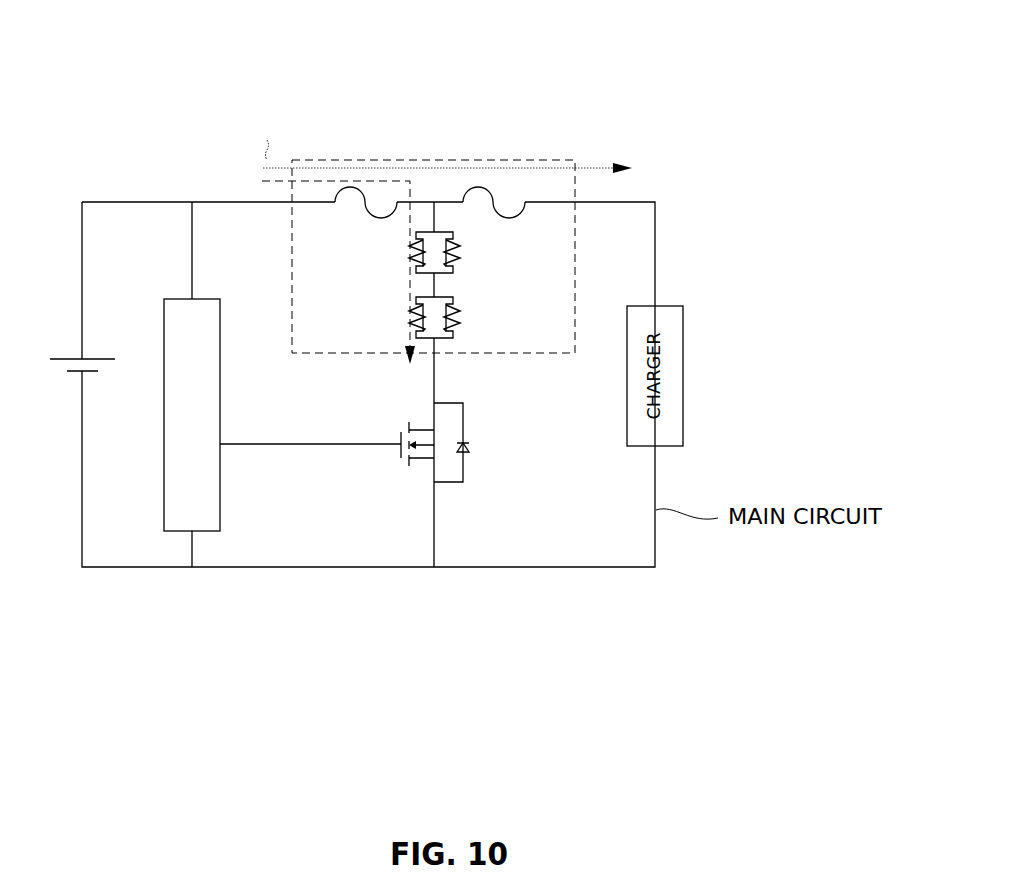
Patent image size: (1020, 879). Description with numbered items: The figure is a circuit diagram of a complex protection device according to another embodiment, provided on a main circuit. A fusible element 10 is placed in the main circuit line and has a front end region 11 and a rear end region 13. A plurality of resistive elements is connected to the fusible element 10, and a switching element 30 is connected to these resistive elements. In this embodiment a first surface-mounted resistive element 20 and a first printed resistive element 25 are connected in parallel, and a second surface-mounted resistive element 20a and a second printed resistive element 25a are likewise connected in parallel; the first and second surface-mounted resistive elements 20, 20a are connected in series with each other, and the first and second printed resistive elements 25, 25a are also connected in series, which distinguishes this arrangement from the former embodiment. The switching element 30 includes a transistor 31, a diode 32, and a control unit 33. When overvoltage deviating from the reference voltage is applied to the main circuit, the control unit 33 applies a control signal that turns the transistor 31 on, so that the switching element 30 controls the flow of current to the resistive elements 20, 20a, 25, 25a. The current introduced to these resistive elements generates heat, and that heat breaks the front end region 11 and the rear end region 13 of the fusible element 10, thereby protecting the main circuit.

The fusible element 10 is at (430, 110).
The front end region 11 is at (357, 183).
The rear end region 13 is at (494, 137).
The first surface-mounted resistive element 20 is at (458, 240).
The second surface-mounted resistive element 20a is at (458, 305).
The first printed resistive element 25 is at (410, 243).
The second printed resistive element 25a is at (410, 308).
The switching element 30 is at (316, 530).
The transistor 31 is at (424, 462).
The diode 32 is at (466, 456).
The control unit 33 is at (198, 504).